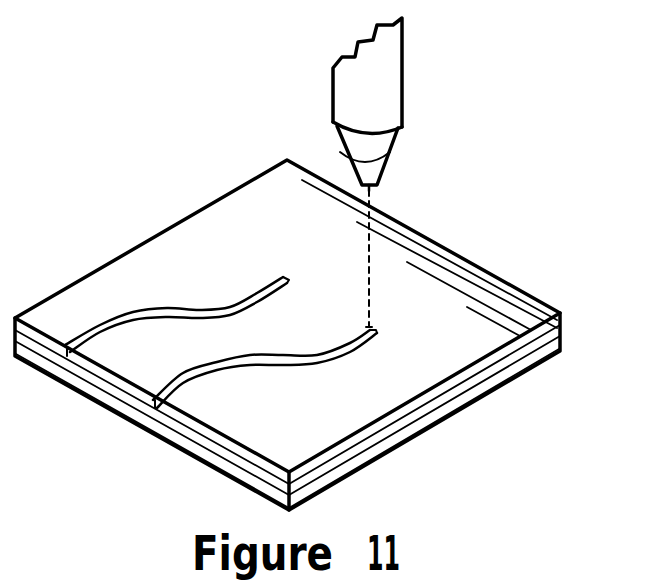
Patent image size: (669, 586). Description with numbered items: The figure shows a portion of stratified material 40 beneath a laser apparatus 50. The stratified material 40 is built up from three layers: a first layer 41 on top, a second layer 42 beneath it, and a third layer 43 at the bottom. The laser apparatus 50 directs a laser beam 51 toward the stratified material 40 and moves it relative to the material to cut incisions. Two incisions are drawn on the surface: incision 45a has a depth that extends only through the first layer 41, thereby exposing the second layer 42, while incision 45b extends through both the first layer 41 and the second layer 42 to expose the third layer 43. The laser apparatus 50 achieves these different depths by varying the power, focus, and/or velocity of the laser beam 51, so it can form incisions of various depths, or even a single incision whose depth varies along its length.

The stratified material 40 is at (326, 335).
The first layer 41 is at (515, 282).
The second layer 42 is at (560, 332).
The third layer 43 is at (530, 370).
The incision 45a is at (233, 313).
The incision 45b is at (235, 369).
The laser apparatus 50 is at (318, 97).
The laser beam 51 is at (368, 302).